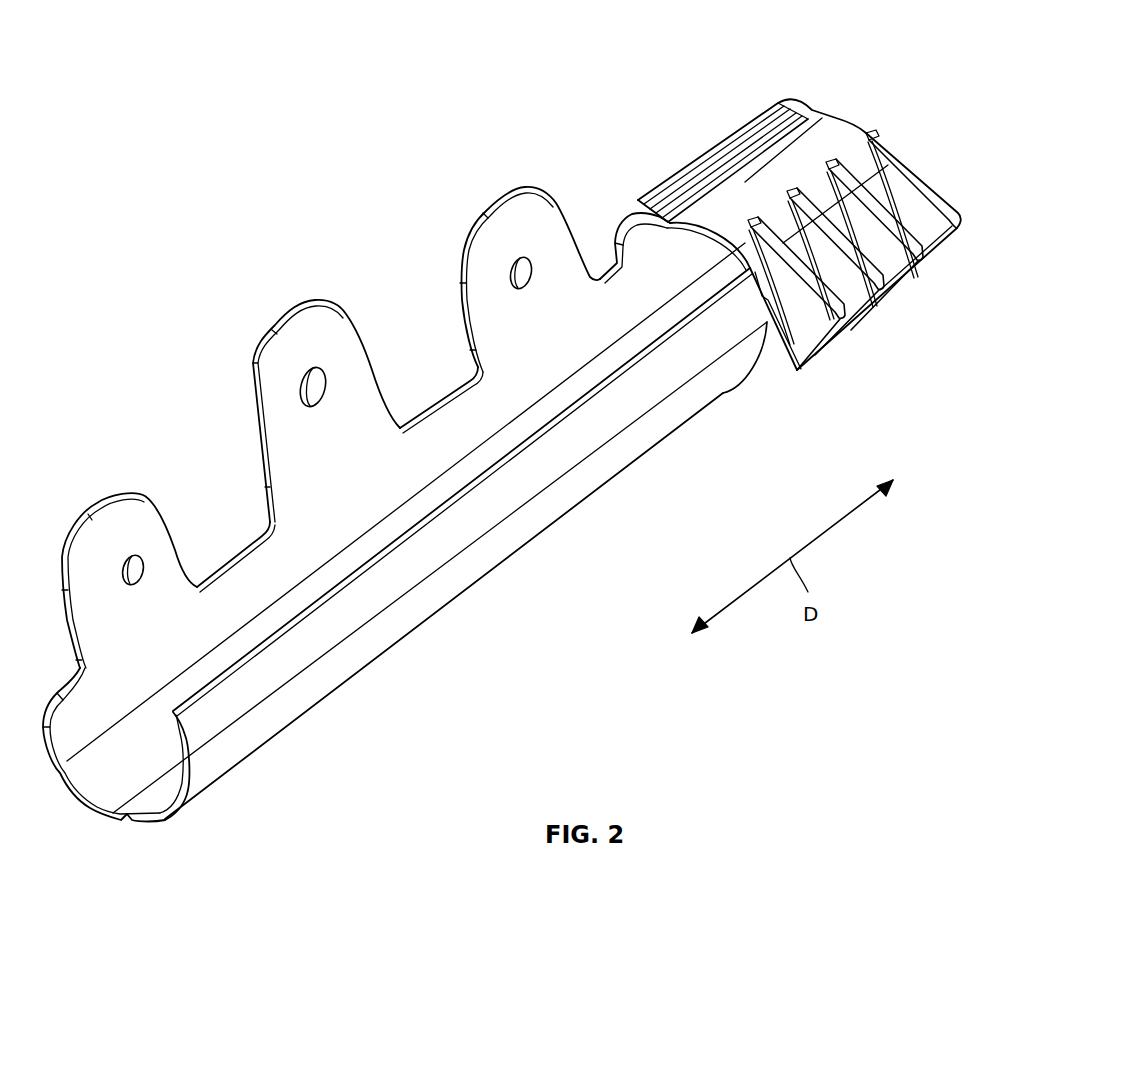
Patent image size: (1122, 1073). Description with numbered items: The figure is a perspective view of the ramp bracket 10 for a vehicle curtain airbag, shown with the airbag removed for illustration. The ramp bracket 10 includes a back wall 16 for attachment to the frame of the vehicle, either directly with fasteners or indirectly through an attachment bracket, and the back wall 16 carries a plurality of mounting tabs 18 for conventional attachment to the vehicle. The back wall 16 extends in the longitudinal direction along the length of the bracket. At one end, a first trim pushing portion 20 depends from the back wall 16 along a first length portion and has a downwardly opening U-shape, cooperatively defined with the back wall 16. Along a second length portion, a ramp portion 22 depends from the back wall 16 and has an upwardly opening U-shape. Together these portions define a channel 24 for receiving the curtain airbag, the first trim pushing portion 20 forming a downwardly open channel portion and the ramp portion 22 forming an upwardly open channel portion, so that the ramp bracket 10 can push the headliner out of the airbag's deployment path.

The ramp bracket 10 is at (198, 142).
The back wall 16 is at (435, 403).
The mounting tabs 18 is at (102, 502).
The first trim pushing portion 20 is at (820, 133).
The ramp portion 22 is at (433, 568).
The channel 24 is at (129, 780).